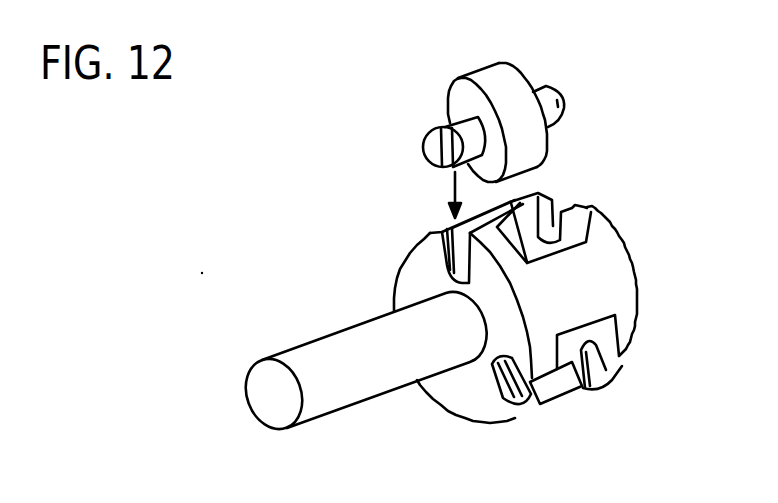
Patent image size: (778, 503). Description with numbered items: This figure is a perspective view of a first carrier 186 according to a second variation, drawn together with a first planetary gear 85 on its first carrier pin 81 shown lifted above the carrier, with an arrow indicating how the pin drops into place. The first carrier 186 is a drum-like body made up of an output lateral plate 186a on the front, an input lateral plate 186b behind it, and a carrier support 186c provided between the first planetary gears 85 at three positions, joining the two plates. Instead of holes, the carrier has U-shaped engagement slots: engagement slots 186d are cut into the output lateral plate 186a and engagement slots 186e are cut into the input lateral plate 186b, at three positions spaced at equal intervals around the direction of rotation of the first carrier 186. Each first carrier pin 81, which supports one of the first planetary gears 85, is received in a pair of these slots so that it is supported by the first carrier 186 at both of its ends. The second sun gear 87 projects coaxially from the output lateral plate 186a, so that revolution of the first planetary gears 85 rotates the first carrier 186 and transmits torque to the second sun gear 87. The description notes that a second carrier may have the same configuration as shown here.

The first carrier pin 81 is at (558, 103).
The first planetary gear 85 is at (518, 122).
The second sun gear 87 is at (355, 392).
The first carrier 186 is at (456, 321).
The output lateral plate 186a is at (452, 402).
The input lateral plate 186b is at (585, 388).
The carrier support 186c is at (600, 277).
The engagement slot 186d is at (457, 263).
The engagement slot 186e is at (550, 208).